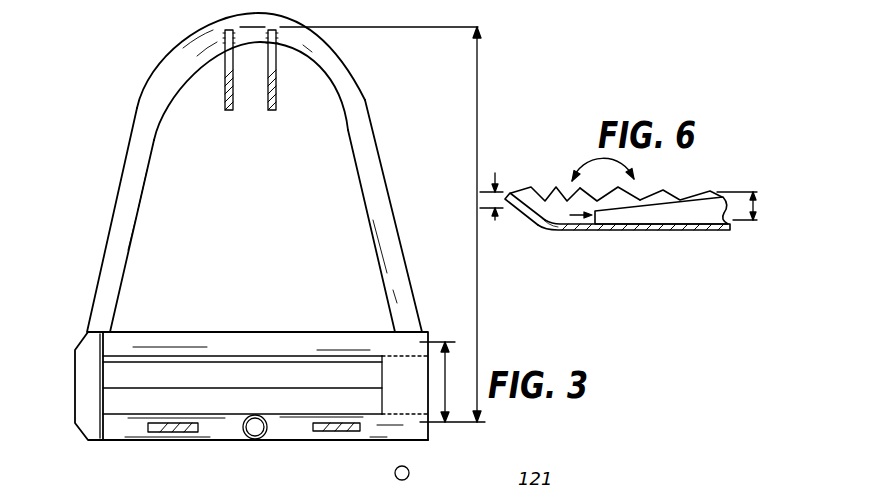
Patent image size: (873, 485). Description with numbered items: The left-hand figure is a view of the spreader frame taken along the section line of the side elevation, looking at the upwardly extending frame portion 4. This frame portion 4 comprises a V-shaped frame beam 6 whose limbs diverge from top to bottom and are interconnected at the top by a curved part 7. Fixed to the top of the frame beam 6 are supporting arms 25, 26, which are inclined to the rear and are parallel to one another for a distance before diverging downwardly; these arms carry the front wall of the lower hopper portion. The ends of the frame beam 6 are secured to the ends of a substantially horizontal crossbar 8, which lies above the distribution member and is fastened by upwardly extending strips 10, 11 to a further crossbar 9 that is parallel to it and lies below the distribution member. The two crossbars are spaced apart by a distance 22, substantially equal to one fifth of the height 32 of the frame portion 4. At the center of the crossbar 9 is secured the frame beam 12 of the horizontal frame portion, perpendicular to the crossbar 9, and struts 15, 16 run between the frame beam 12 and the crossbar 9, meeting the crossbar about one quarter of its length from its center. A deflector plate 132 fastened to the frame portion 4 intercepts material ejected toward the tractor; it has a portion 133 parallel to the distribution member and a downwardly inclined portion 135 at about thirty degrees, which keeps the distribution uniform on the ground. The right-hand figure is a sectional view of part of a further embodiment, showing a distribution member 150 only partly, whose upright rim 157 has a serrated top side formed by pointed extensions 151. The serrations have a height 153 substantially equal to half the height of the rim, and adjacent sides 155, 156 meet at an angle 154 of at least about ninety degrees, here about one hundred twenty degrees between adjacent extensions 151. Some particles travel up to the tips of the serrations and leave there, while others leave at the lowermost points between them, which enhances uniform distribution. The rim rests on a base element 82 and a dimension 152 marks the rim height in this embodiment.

In FIG. 3, the curved part 7 is at (213, 29).
In FIG. 3, the supporting arm 25 is at (225, 95).
In FIG. 3, the supporting arm 26 is at (277, 95).
In FIG. 3, the upwardly extending frame portion 4 is at (377, 212).
In FIG. 3, the V-shaped frame beam 6 is at (118, 250).
In FIG. 3, the height of the frame portion 32 is at (476, 257).
In FIG. 3, the upwardly extending strip 10 is at (87, 354).
In FIG. 3, the portion of the deflector plate 133 is at (205, 360).
In FIG. 3, the crossbar 8 is at (273, 333).
In FIG. 3, the downwardly inclined portion 135 is at (217, 377).
In FIG. 3, the deflector plate 132 is at (345, 370).
In FIG. 3, the upwardly extending strip 11 is at (395, 390).
In FIG. 3, the distance between the crossbars 22 is at (468, 383).
In FIG. 3, the strut 15 is at (183, 432).
In FIG. 3, the frame beam 12 is at (258, 440).
In FIG. 3, the strut 16 is at (355, 430).
In FIG. 3, the further crossbar 9 is at (418, 435).
In FIG. 6, the distribution member 150 is at (638, 226).
In FIG. 6, the bar 82 is at (703, 213).
In FIG. 6, the upright rim 157 is at (537, 198).
In FIG. 6, the side of serration 155 is at (543, 228).
In FIG. 6, the side of serration 156 is at (552, 162).
In FIG. 6, the angle between adjacent extensions 154 is at (607, 162).
In FIG. 6, the pointed extensions 151 is at (635, 200).
In FIG. 6, the height of the serrations 153 is at (481, 192).
In FIG. 6, the bar height dimension 152 is at (740, 195).